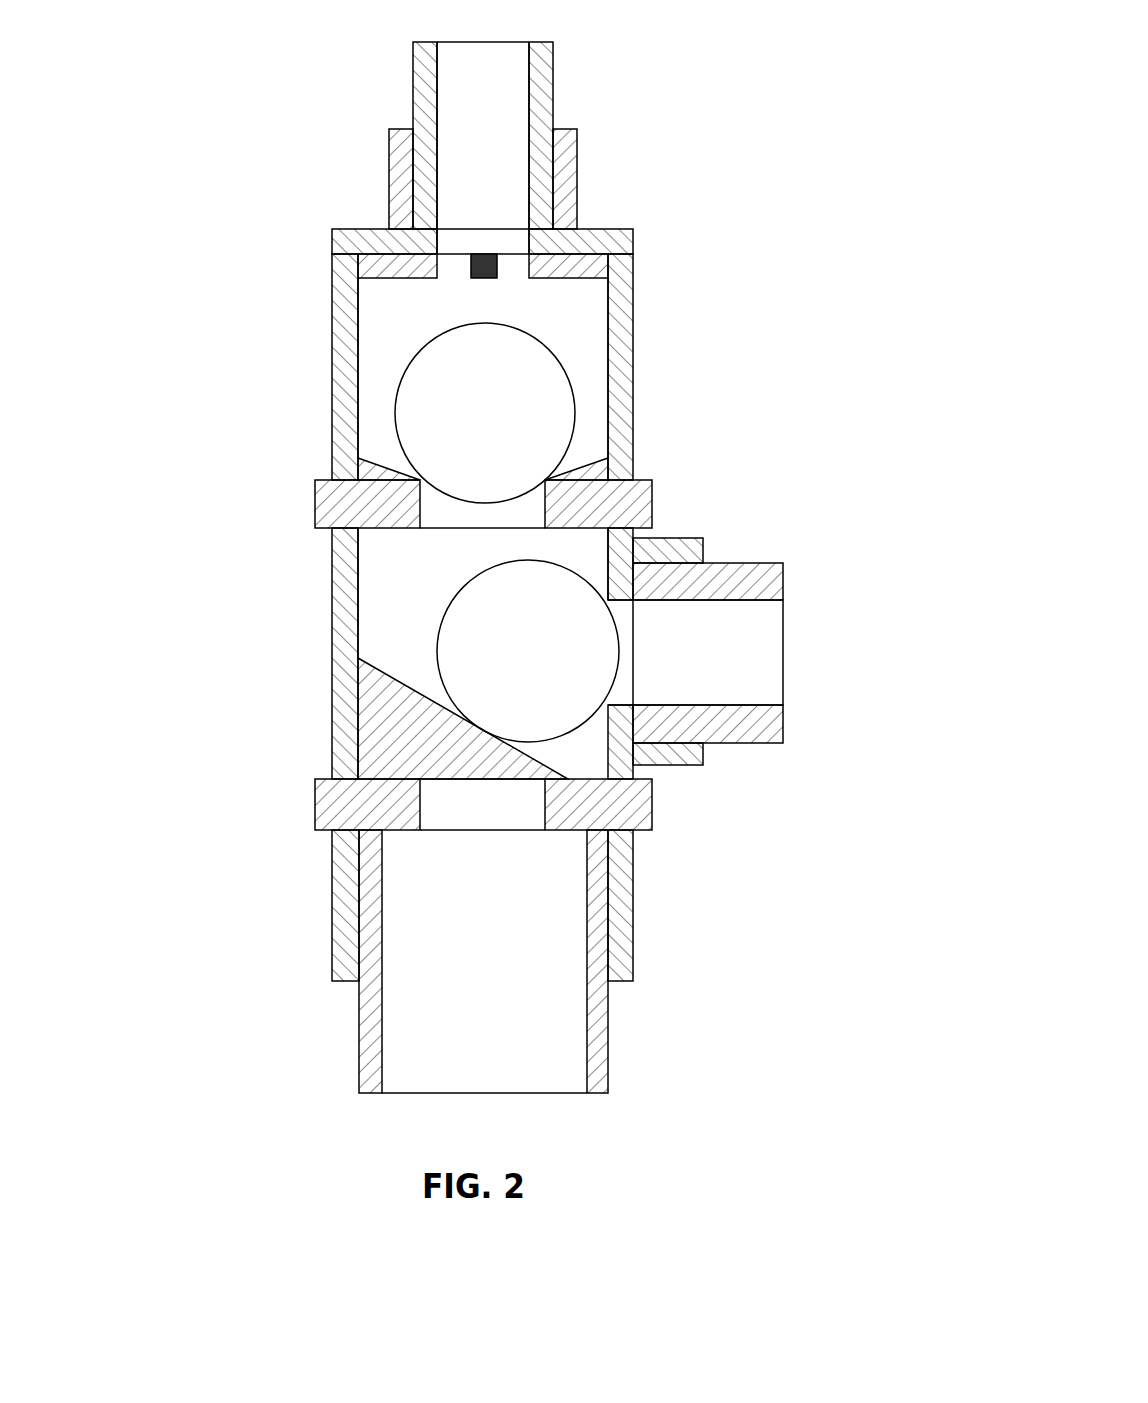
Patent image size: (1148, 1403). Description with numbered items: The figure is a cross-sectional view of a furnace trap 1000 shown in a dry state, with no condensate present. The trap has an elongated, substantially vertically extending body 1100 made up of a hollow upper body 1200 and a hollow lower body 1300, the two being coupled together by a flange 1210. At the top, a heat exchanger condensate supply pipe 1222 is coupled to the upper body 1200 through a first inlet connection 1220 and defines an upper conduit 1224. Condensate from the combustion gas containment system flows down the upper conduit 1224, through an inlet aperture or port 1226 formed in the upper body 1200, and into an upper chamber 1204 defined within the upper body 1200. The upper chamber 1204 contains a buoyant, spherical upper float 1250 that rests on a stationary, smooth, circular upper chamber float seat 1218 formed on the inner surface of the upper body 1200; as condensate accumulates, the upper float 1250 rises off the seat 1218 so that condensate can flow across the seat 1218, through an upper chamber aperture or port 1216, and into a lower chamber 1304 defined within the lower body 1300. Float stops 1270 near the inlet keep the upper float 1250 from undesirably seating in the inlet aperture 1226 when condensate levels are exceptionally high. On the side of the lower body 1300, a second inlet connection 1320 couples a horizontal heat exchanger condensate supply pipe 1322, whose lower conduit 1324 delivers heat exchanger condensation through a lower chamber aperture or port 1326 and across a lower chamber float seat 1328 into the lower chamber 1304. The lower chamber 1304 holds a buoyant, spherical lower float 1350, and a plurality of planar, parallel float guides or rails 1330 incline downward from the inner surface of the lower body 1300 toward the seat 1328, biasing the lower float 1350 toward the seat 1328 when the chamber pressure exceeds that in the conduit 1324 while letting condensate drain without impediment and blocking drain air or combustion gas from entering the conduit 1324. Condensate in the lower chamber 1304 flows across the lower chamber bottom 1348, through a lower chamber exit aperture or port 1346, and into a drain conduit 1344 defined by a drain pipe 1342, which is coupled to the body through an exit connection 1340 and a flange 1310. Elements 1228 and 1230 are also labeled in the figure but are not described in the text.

The furnace trap 1000 is at (152, 123).
The body 1100 is at (202, 200).
The upper body 1200 is at (638, 251).
The upper chamber 1204 is at (585, 337).
The flange 1210 is at (655, 497).
The upper chamber aperture or port 1216 is at (452, 520).
The upper chamber float seat 1218 is at (420, 482).
The first inlet connection 1220 is at (580, 147).
The heat exchanger condensate supply pipe 1222 is at (557, 47).
The upper conduit 1224 is at (505, 95).
The inlet aperture or port 1226 is at (460, 240).
The orifice insert 1228 is at (450, 263).
The wedge guide 1230 is at (363, 475).
The upper float 1250 is at (505, 405).
The float stops 1270 is at (587, 268).
The lower body 1300 is at (327, 590).
The lower chamber 1304 is at (395, 608).
The flange 1310 is at (651, 790).
The second inlet connection 1320 is at (707, 550).
The heat exchanger condensate supply pipe 1322 is at (781, 583).
The lower conduit 1324 is at (757, 633).
The lower chamber aperture or port 1326 is at (643, 684).
The lower chamber float seat 1328 is at (619, 627).
The float guides or rails 1330 is at (390, 753).
The exit connection 1340 is at (631, 903).
The drain pipe 1342 is at (608, 1018).
The drain conduit 1344 is at (548, 1073).
The lower chamber exit aperture or port 1346 is at (495, 813).
The lower chamber bottom 1348 is at (488, 782).
The lower float 1350 is at (498, 665).